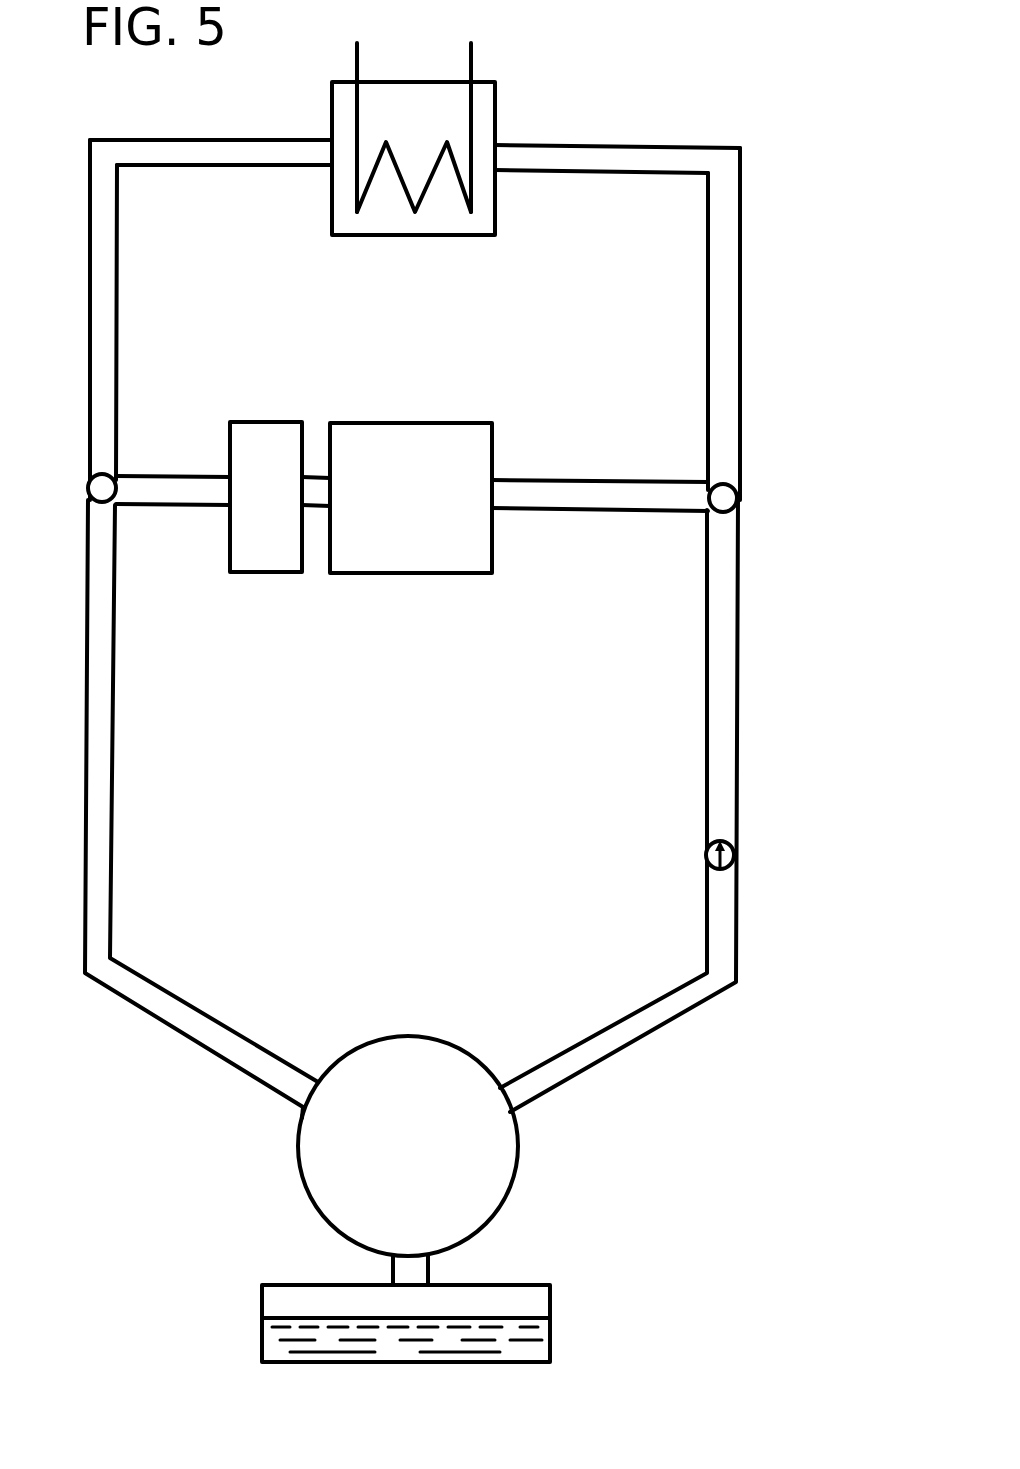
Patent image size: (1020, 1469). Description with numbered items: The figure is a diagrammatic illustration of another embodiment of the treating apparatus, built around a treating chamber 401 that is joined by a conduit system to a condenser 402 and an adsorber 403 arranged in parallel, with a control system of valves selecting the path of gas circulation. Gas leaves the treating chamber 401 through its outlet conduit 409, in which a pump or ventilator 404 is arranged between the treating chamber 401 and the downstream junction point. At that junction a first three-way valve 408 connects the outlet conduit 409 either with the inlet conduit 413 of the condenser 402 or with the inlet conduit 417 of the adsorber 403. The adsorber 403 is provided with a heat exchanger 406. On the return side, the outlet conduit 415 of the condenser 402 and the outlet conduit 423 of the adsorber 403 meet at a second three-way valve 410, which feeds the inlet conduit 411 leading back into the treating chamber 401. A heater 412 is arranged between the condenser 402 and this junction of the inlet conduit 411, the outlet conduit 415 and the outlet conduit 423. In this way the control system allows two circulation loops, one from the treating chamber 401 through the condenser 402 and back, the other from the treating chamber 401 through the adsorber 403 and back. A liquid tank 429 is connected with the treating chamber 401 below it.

The treating chamber 401 is at (485, 1185).
The condenser 402 is at (403, 460).
The adsorber 403 is at (403, 226).
The pump or ventilator 404 is at (708, 858).
The heat exchanger 406 is at (472, 62).
The first three-way valve 408 is at (724, 496).
The outlet conduit 409 is at (598, 1053).
The second three-way valve 410 is at (104, 490).
The inlet conduit 411 is at (128, 983).
The heater 412 is at (273, 546).
The inlet conduit 413 is at (556, 494).
The outlet conduit 415 is at (185, 474).
The inlet conduit 417 is at (673, 160).
The outlet conduit 423 is at (163, 152).
The liquid tank 429 is at (546, 1330).